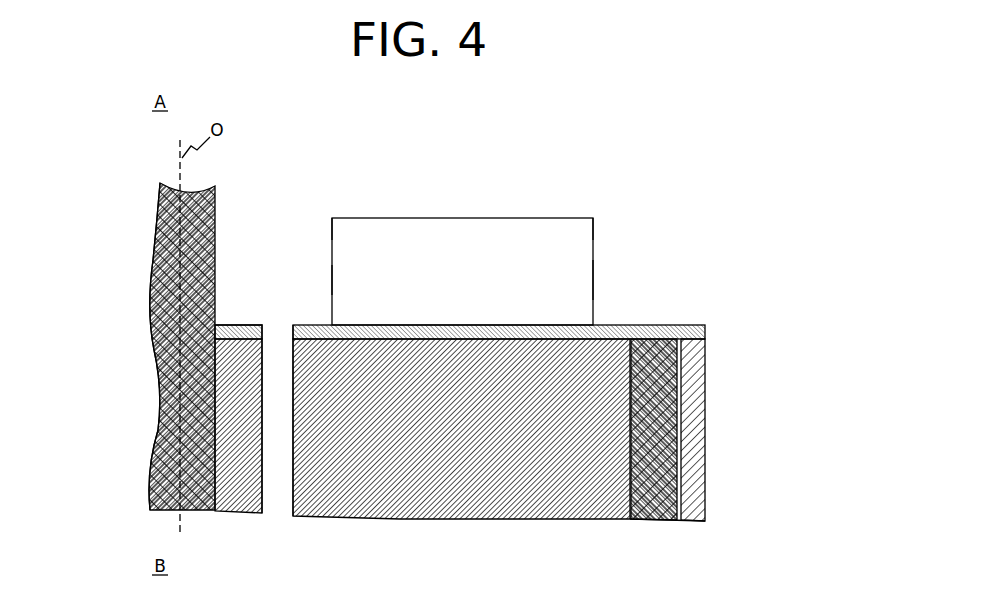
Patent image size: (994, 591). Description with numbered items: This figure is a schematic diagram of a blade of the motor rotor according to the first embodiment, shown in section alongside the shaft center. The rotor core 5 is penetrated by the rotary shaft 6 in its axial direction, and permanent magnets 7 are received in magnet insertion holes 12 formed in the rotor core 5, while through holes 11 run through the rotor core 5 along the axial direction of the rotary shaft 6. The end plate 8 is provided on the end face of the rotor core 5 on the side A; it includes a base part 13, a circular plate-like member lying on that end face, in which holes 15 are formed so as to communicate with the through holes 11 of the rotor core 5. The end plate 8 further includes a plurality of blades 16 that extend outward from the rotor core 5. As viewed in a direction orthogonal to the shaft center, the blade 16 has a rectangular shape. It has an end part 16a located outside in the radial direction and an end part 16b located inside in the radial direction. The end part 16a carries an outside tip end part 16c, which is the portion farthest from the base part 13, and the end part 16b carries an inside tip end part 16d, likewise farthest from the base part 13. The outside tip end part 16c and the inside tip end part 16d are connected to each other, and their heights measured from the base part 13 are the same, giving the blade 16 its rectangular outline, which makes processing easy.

The rotor core 5 is at (499, 430).
The rotary shaft 6 is at (142, 346).
The permanent magnets 7 is at (707, 423).
The end plate 8 is at (499, 307).
The through holes 11 is at (178, 427).
The magnet insertion holes 12 is at (737, 430).
The base part 13 is at (150, 332).
The holes 15 is at (178, 285).
The blade 16 is at (462, 209).
The end part outside in the radial direction 16a is at (697, 260).
The end part inside in the radial direction 16b is at (160, 184).
The outside tip end part 16c is at (640, 167).
The inside tip end part 16d is at (381, 167).